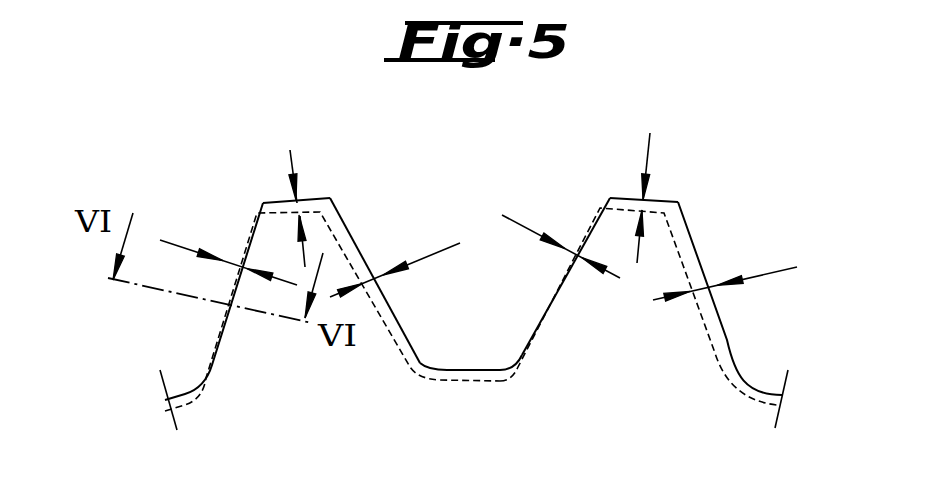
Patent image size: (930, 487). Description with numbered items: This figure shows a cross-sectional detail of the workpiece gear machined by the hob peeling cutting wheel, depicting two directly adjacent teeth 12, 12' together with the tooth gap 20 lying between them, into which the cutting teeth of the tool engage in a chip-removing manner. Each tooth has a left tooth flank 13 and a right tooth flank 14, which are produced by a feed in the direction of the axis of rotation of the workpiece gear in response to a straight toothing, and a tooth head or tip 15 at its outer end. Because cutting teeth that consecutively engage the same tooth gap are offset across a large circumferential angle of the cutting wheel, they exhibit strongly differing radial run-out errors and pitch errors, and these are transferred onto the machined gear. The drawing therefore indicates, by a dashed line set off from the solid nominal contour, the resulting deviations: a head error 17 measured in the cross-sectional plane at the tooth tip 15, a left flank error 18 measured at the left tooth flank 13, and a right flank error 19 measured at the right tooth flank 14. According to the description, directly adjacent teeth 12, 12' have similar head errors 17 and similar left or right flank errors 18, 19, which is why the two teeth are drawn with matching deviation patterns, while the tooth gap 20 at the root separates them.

The tooth 12 is at (332, 311).
The adjacent tooth 12' is at (638, 306).
The left tooth flank 13 is at (226, 327).
The right tooth flank 14 is at (397, 303).
The tooth tip 15 is at (313, 198).
The head error 17 is at (290, 152).
The left flank error 18 is at (175, 243).
The right flank error 19 is at (433, 248).
The tooth root 20 is at (462, 370).